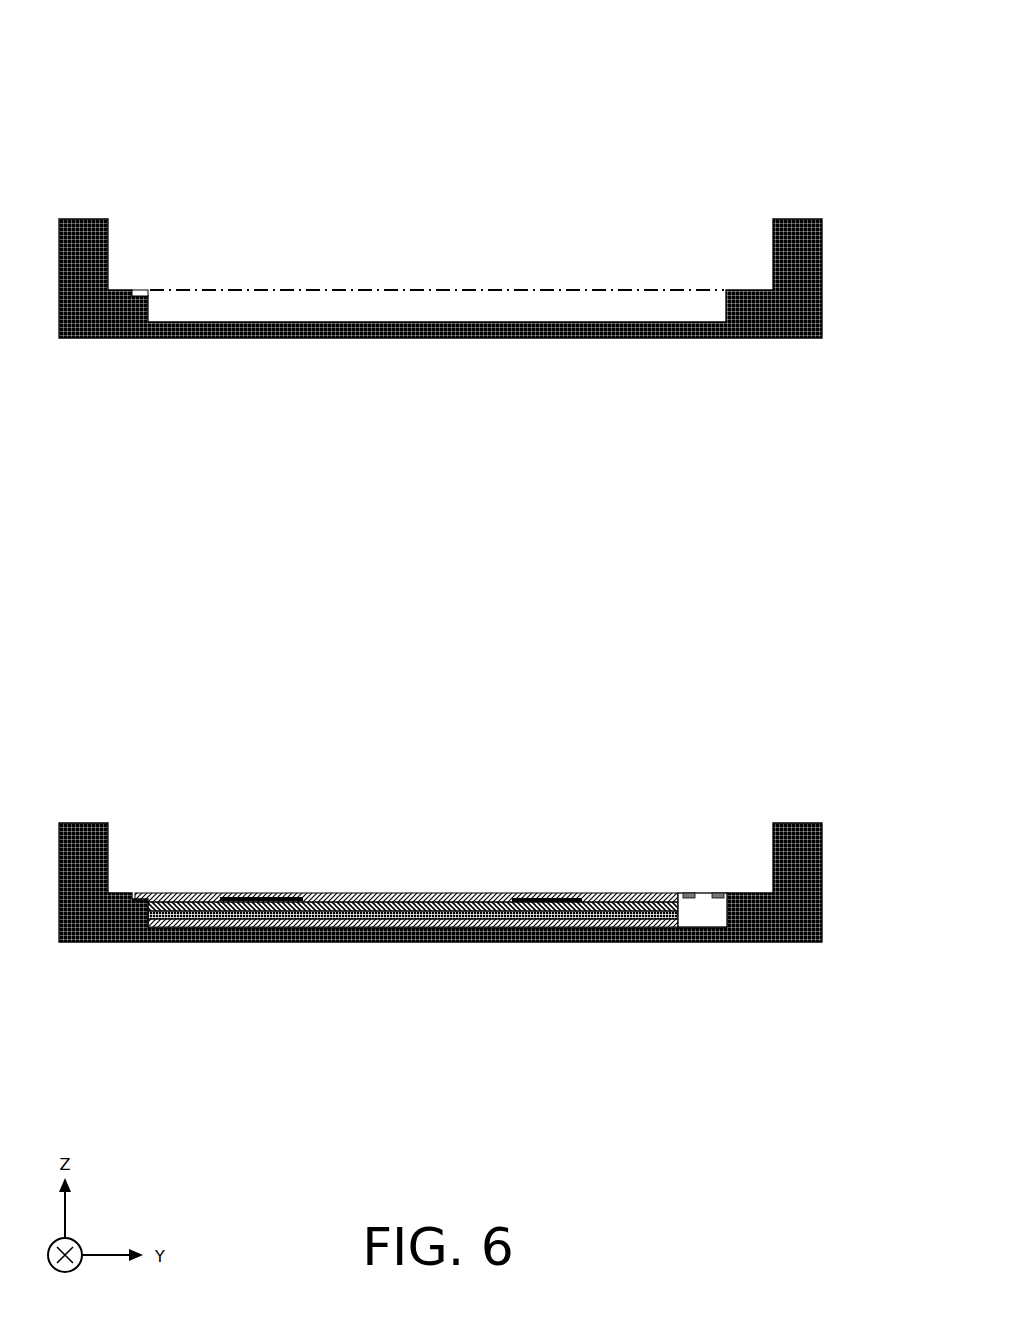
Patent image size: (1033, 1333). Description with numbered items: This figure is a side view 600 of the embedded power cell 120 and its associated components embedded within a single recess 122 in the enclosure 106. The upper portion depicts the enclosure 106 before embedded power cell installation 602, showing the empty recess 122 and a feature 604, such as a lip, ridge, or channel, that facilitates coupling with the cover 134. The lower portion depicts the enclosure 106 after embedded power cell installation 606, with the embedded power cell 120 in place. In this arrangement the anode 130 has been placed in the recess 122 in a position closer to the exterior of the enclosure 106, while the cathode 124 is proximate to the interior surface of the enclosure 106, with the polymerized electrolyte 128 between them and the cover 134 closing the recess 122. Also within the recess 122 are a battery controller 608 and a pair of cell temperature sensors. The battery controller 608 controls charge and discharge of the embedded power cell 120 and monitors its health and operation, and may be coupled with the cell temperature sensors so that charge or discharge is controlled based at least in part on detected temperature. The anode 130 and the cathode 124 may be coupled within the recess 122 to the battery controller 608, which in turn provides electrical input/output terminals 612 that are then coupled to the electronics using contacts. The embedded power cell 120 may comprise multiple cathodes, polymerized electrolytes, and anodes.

The side view 600 is at (699, 47).
The before embedded power cell installation 602 is at (321, 130).
The feature 604 is at (153, 288).
The recess 122 is at (487, 295).
The enclosure 106 is at (85, 308).
The after embedded power cell installation 606 is at (322, 546).
The cover 134 is at (436, 886).
The electrical input/output terminals 612 is at (626, 802).
The polymerized electrolyte 128 is at (415, 915).
The anode 130 is at (303, 922).
The cathode 124 is at (475, 904).
The battery controller 608 is at (708, 913).
The embedded power cell 120 is at (416, 896).